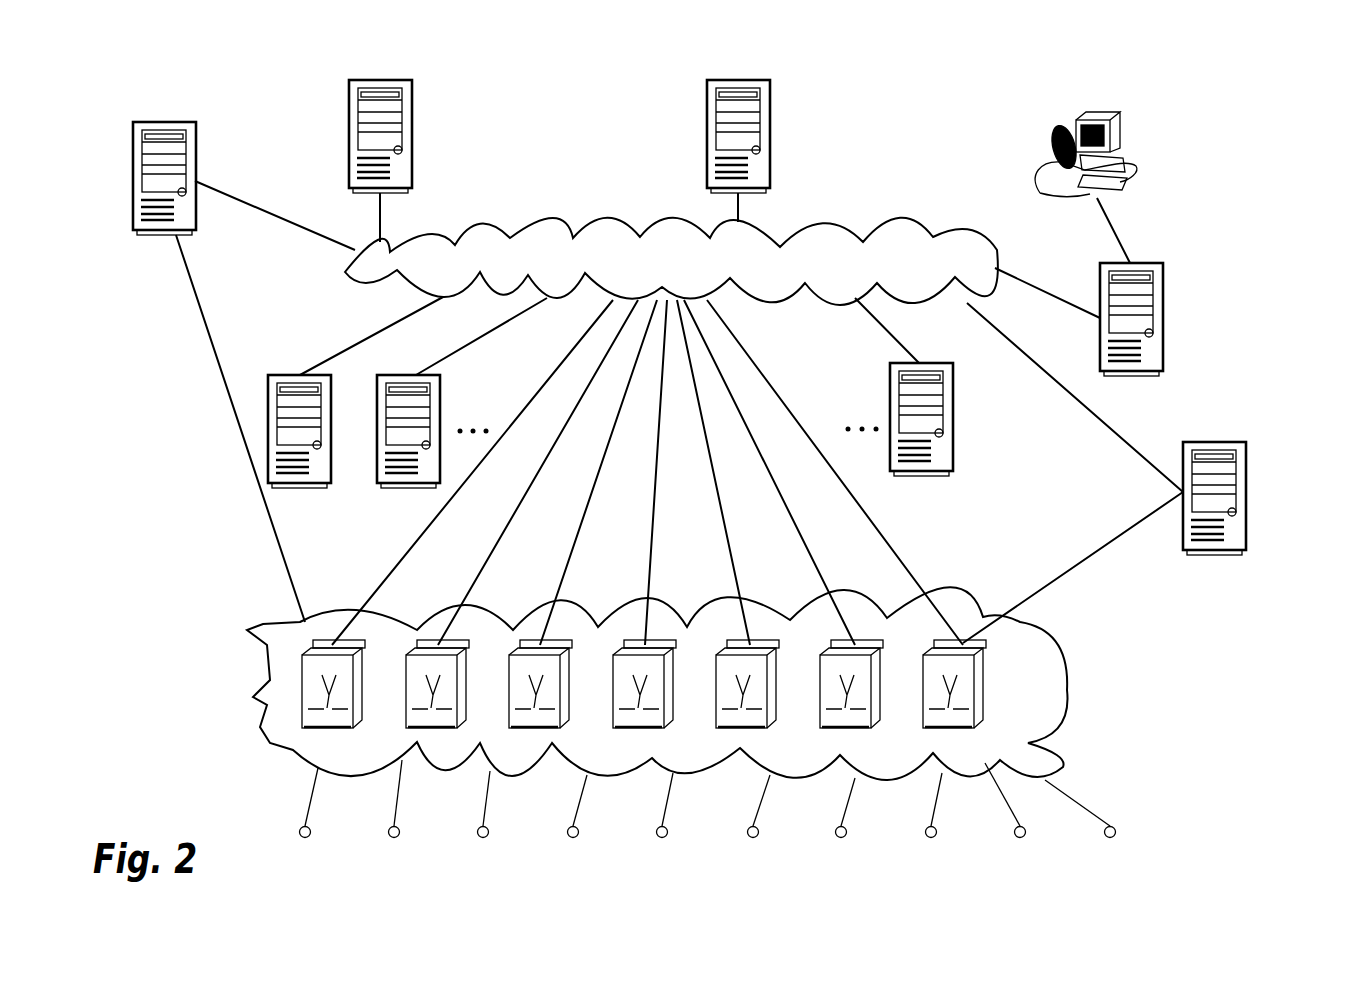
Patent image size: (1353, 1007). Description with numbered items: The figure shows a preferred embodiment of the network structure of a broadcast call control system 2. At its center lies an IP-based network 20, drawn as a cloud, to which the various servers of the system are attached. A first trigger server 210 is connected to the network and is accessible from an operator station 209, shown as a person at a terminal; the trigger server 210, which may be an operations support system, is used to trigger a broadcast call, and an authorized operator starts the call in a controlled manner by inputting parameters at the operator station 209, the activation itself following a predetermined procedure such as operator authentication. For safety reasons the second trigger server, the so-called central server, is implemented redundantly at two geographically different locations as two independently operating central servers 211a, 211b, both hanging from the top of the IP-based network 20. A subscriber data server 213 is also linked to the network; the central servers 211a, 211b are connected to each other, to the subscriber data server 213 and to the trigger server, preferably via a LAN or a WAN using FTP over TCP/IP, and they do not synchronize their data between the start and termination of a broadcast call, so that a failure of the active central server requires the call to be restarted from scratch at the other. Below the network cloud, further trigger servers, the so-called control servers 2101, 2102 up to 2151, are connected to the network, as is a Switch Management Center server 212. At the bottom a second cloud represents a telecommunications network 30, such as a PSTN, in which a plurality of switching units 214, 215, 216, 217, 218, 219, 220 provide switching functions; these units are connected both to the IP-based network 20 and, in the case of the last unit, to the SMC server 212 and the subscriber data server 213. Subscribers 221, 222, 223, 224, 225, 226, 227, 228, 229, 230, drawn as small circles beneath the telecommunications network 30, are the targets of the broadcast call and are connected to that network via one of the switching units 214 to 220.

The broadcast call control system 2 is at (1236, 151).
The IP-based network 20 is at (912, 222).
The telecommunications network 30 is at (253, 697).
The operator station 209 is at (1137, 168).
The first trigger server 210 is at (1165, 345).
The central server 211a is at (412, 128).
The central server 211b is at (770, 118).
The Switch Management Center server 212 is at (1235, 533).
The subscriber data server 213 is at (196, 154).
The control server 2101 is at (300, 490).
The control server 2102 is at (442, 425).
The control server 2151 is at (953, 415).
The switching unit 214 is at (333, 642).
The switching unit 215 is at (430, 645).
The switching unit 216 is at (540, 645).
The switching unit 217 is at (632, 643).
The switching unit 218 is at (760, 640).
The switching unit 219 is at (857, 640).
The switching unit 220 is at (958, 640).
The subscriber 221 is at (305, 824).
The subscriber 222 is at (394, 820).
The subscriber 223 is at (483, 825).
The subscriber 224 is at (573, 827).
The subscriber 225 is at (662, 826).
The subscriber 226 is at (753, 827).
The subscriber 227 is at (841, 829).
The subscriber 228 is at (931, 826).
The subscriber 229 is at (1014, 821).
The subscriber 230 is at (1088, 830).